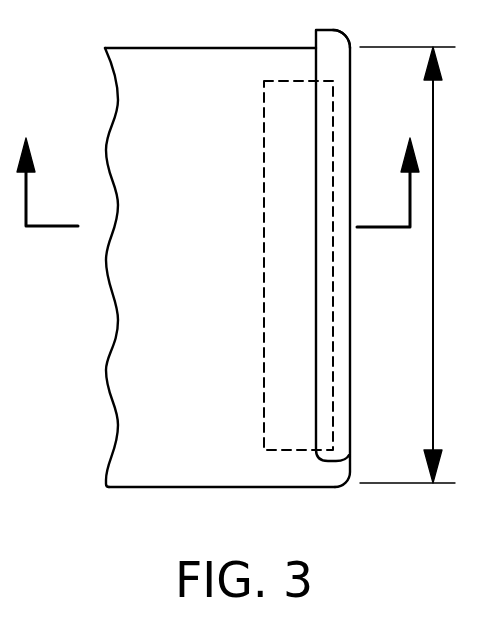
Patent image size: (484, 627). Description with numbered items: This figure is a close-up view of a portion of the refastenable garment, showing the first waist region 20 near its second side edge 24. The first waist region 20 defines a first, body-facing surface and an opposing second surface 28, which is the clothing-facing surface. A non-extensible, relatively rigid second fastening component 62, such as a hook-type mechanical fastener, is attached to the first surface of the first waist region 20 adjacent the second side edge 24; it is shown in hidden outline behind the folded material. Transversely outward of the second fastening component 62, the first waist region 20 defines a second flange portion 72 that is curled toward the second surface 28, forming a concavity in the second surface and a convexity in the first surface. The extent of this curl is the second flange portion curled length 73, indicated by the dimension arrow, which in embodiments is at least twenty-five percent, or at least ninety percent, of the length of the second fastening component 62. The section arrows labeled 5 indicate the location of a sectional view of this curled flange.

The first waist region 20 is at (173, 72).
The second side edge 24 is at (313, 105).
The second surface 28 is at (200, 488).
The second fastening component 62 is at (264, 262).
The second flange portion 72 is at (338, 60).
The second flange portion curled length 73 is at (433, 290).
The section line for FIG. 5 is at (218, 164).